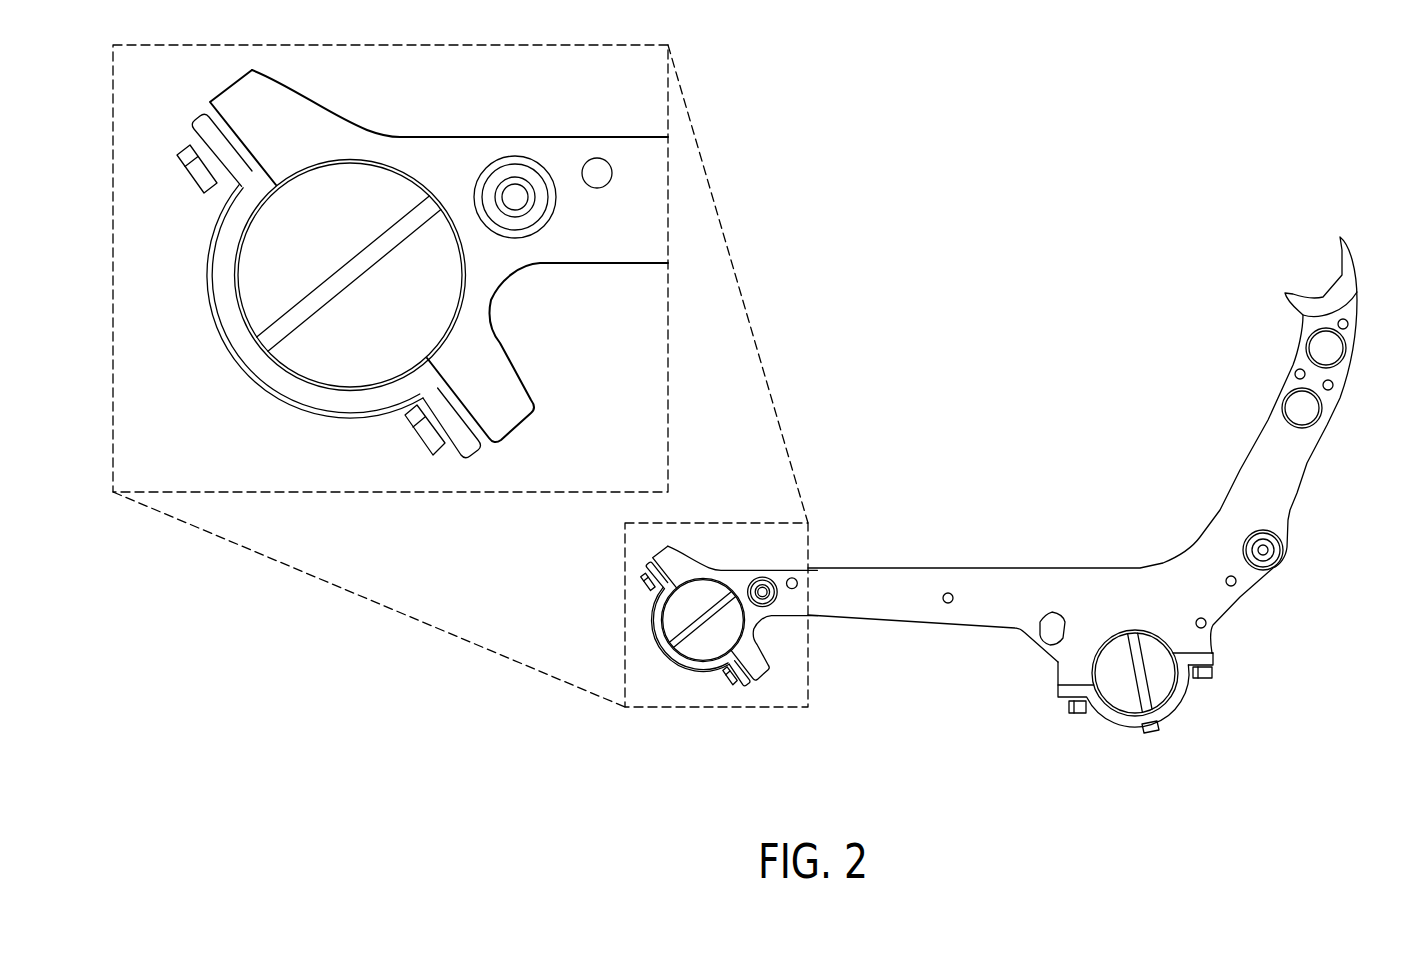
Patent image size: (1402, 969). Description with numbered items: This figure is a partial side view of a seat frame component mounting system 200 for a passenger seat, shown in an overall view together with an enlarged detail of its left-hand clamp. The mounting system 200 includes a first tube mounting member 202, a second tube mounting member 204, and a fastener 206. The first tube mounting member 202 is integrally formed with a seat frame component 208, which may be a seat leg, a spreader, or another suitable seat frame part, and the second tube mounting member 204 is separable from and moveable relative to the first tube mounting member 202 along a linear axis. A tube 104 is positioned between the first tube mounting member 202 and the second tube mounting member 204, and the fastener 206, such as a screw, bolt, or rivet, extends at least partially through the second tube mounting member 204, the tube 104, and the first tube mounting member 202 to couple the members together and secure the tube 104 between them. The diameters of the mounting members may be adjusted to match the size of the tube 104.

The seat frame component mounting system 200 is at (1099, 282).
The first tube mounting member 202 is at (508, 394).
The second tube mounting member 204 is at (322, 397).
The fastener 206 is at (224, 372).
The seat frame component 208 is at (1067, 590).
The tube 104 is at (371, 381).